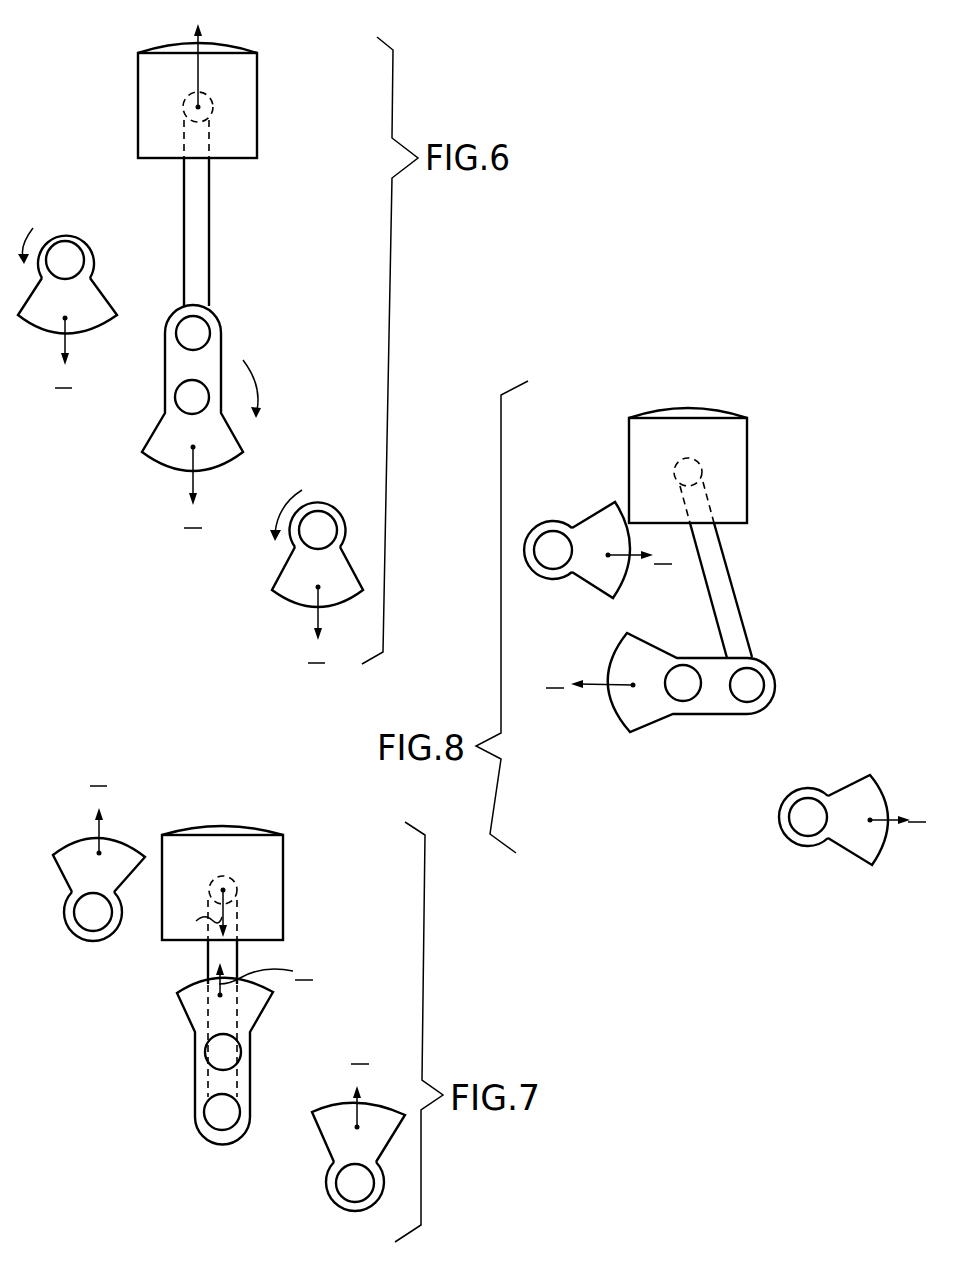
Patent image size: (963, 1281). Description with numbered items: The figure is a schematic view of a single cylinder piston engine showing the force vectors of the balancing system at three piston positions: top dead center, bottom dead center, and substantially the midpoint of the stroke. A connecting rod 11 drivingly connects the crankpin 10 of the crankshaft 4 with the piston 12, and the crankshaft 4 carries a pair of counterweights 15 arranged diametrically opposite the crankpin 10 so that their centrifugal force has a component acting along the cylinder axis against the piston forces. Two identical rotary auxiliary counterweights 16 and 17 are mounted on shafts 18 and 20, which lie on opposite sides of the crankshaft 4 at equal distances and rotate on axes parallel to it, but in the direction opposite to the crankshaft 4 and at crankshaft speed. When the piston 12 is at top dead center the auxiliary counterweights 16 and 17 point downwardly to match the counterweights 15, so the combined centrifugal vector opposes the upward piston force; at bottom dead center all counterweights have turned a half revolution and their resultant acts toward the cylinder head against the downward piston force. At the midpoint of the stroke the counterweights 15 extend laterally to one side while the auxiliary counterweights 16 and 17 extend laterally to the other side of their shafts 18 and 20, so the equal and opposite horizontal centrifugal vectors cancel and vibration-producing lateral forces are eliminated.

In FIG. 6, the crankshaft 4 is at (176, 399).
In FIG. 8, the crankshaft 4 is at (677, 660).
In FIG. 7, the crankshaft 4 is at (207, 1057).
In FIG. 6, the crankpin 10 is at (208, 340).
In FIG. 8, the crankpin 10 is at (760, 698).
In FIG. 7, the crankpin 10 is at (222, 1128).
In FIG. 6, the connecting rod 11 is at (209, 252).
In FIG. 8, the connecting rod 11 is at (733, 590).
In FIG. 7, the connecting rod 11 is at (208, 964).
In FIG. 6, the piston 12 is at (257, 133).
In FIG. 8, the piston 12 is at (748, 473).
In FIG. 7, the piston 12 is at (283, 880).
In FIG. 6, the counterweights 15 is at (165, 468).
In FIG. 8, the counterweights 15 is at (618, 732).
In FIG. 7, the counterweights 15 is at (262, 1020).
In FIG. 6, the auxiliary counterweight 16 is at (99, 330).
In FIG. 8, the auxiliary counterweight 16 is at (590, 590).
In FIG. 7, the auxiliary counterweight 16 is at (55, 857).
In FIG. 6, the auxiliary counterweight 17 is at (280, 598).
In FIG. 8, the auxiliary counterweight 17 is at (886, 860).
In FIG. 7, the auxiliary counterweight 17 is at (322, 1150).
In FIG. 6, the shaft 18 is at (73, 240).
In FIG. 8, the shaft 18 is at (553, 527).
In FIG. 7, the shaft 18 is at (88, 935).
In FIG. 6, the shaft 20 is at (335, 512).
In FIG. 8, the shaft 20 is at (806, 838).
In FIG. 7, the shaft 20 is at (352, 1208).